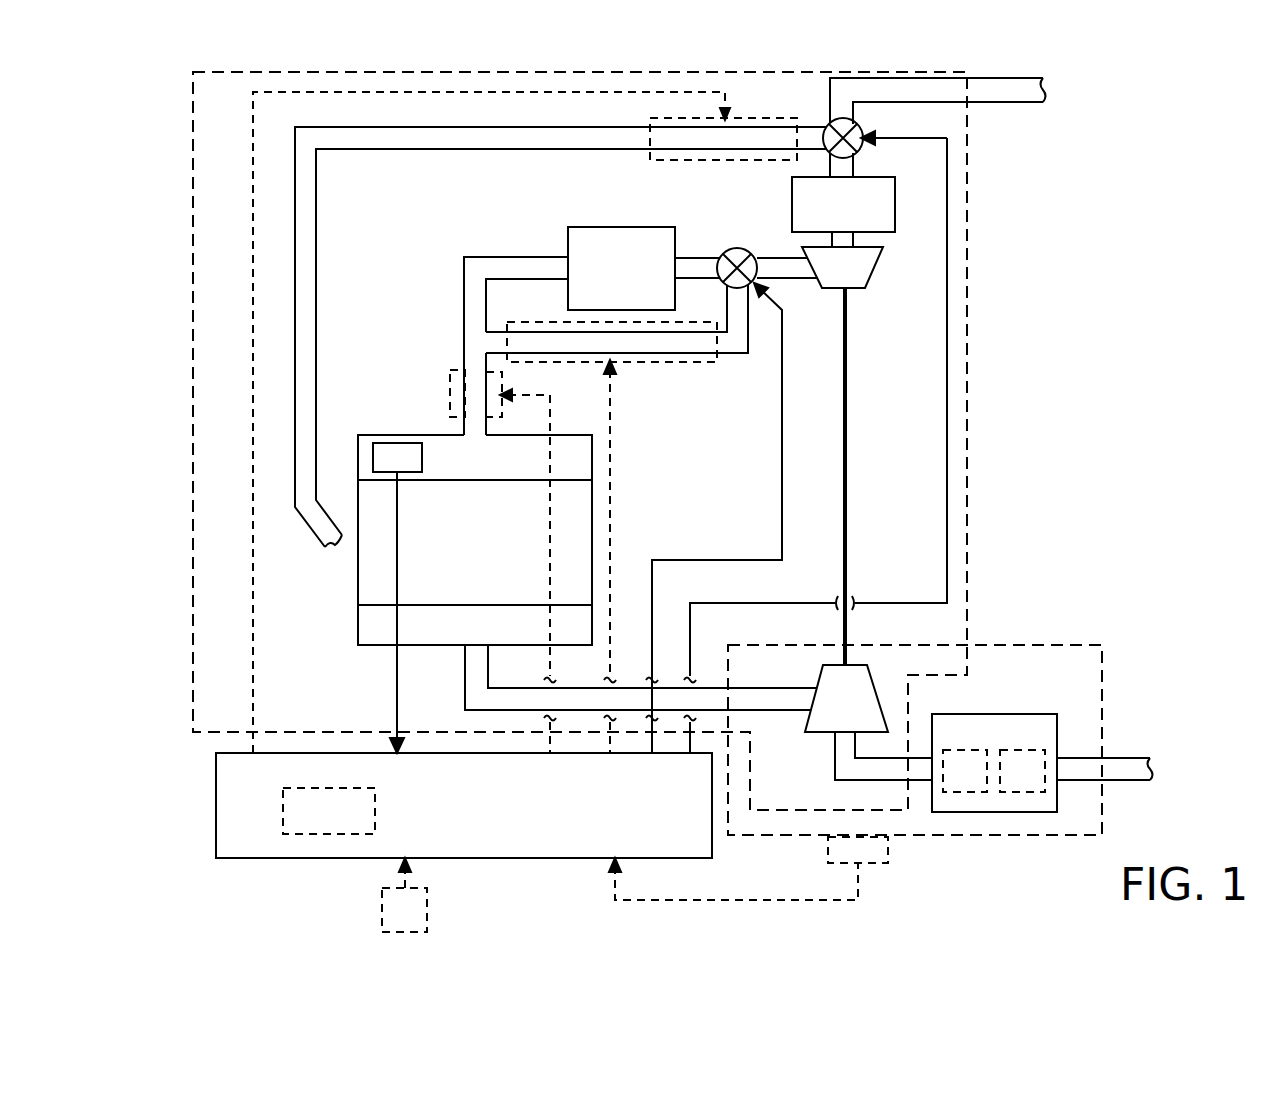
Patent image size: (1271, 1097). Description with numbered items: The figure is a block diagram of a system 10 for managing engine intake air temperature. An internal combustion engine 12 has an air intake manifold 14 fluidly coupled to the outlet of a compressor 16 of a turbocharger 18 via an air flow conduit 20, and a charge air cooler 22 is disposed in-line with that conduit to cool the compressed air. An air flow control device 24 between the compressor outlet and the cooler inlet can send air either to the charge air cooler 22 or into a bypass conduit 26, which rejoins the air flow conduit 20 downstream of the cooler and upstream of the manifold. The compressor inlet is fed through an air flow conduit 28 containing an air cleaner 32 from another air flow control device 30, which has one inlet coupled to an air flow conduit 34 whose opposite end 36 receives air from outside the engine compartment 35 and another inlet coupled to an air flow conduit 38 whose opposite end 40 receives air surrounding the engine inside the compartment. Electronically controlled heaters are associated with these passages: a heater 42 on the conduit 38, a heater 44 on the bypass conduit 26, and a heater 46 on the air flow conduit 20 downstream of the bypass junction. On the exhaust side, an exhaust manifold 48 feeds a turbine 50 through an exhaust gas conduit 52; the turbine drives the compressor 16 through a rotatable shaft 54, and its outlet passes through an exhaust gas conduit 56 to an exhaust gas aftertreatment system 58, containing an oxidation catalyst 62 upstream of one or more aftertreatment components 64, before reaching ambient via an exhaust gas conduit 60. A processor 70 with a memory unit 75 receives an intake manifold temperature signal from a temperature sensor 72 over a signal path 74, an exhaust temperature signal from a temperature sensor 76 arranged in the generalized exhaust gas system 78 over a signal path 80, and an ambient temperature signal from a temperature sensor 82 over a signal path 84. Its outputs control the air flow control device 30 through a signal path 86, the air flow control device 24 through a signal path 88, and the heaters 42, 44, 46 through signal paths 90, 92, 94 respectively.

The system 10 is at (1105, 302).
The internal combustion engine 12 is at (358, 598).
The air intake manifold 14 is at (412, 434).
The compressor 16 is at (872, 275).
The turbocharger 18 is at (852, 400).
The air flow conduit 20 is at (512, 257).
The charge air cooler 22 is at (608, 227).
The air flow control device 24 is at (735, 250).
The bypass conduit 26 is at (735, 356).
The air flow conduit 28 is at (853, 240).
The air flow control device 30 is at (826, 124).
The air cleaner 32 is at (896, 192).
The air flow conduit 34 is at (1020, 103).
The engine compartment 35 is at (194, 484).
The opposite end 36 is at (1046, 92).
The air flow conduit 38 is at (408, 152).
The opposite end 40 is at (333, 550).
The heater 42 is at (694, 162).
The heater 44 is at (674, 364).
The heater 46 is at (450, 385).
The exhaust manifold 48 is at (375, 648).
The turbine 50 is at (806, 715).
The exhaust gas conduit 52 is at (770, 688).
The rotatable shaft 54 is at (848, 527).
The exhaust gas conduit 56 is at (835, 772).
The exhaust gas aftertreatment system 58 is at (1057, 725).
The exhaust gas conduit 60 is at (1125, 758).
The oxidation catalyst 62 is at (985, 750).
The exhaust gas aftertreatment components 64 is at (1007, 750).
The processor 70 is at (535, 860).
The temperature sensor 72 is at (422, 460).
The signal path 74 is at (399, 712).
The memory unit 75 is at (283, 812).
The temperature sensor 76 is at (888, 855).
The exhaust gas system 78 is at (1050, 648).
The signal path 80 is at (732, 900).
The temperature sensor 82 is at (428, 910).
The signal path 84 is at (400, 878).
The signal path 86 is at (904, 603).
The signal path 88 is at (722, 560).
The signal path 90 is at (255, 676).
The signal path 92 is at (612, 466).
The signal path 94 is at (550, 408).